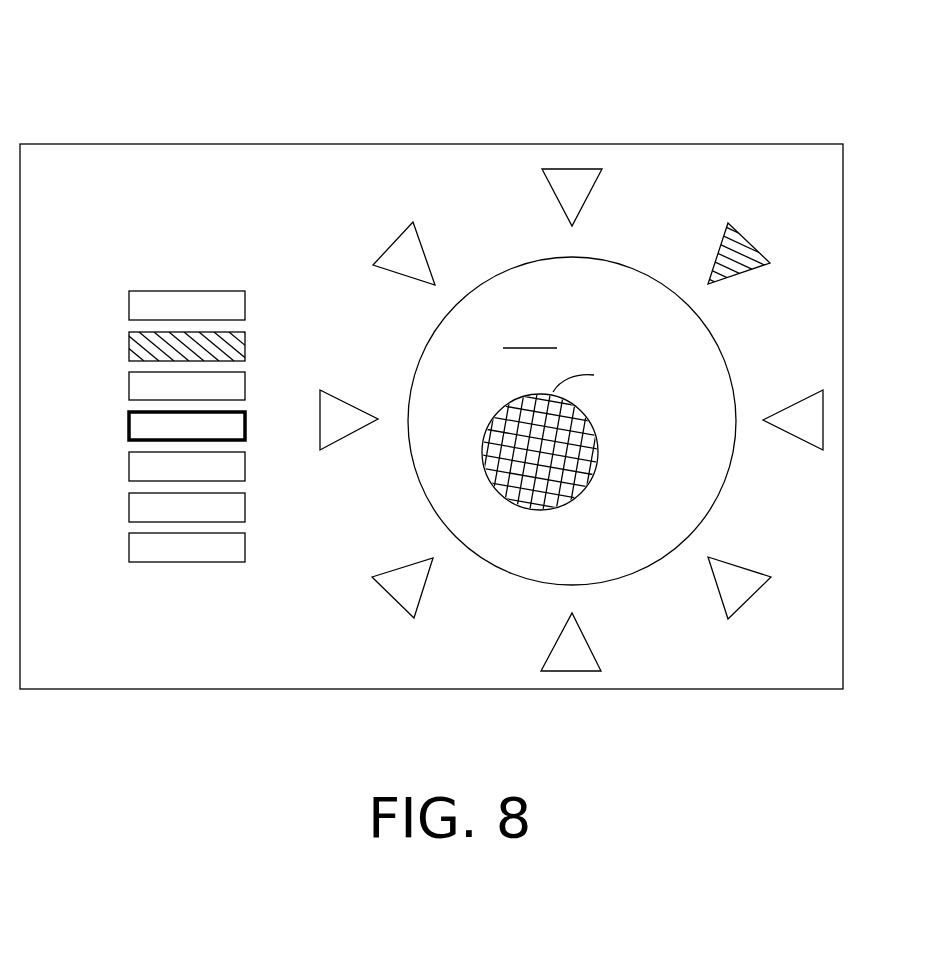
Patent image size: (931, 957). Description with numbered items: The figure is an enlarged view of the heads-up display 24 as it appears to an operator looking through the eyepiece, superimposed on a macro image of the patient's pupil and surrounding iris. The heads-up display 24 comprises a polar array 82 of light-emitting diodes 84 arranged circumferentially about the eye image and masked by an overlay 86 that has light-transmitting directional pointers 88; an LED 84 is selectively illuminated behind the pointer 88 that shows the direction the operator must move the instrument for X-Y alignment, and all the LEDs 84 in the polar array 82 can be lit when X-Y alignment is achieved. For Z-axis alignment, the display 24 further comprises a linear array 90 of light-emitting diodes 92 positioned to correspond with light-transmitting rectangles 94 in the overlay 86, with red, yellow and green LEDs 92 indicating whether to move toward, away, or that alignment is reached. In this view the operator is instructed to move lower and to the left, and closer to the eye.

The heads-up display 24 is at (288, 92).
The polar array 82 is at (305, 603).
The light-emitting diodes 84 is at (578, 192).
The overlay 86 is at (306, 233).
The directional pointers 88 is at (563, 172).
The linear array 90 is at (184, 386).
The light-emitting diodes 92 is at (184, 325).
The light-transmitting rectangles 94 is at (217, 292).